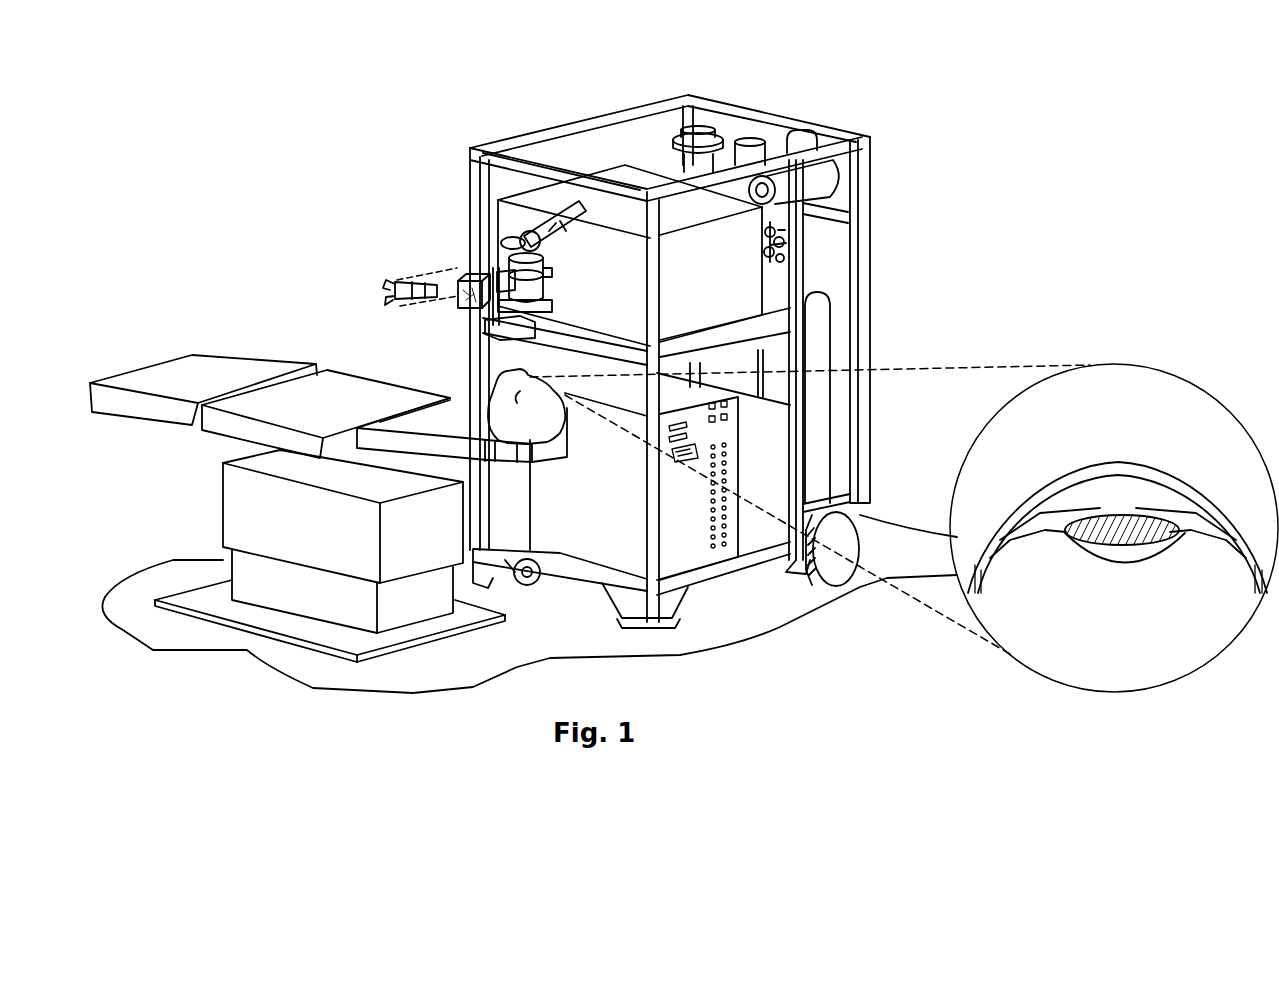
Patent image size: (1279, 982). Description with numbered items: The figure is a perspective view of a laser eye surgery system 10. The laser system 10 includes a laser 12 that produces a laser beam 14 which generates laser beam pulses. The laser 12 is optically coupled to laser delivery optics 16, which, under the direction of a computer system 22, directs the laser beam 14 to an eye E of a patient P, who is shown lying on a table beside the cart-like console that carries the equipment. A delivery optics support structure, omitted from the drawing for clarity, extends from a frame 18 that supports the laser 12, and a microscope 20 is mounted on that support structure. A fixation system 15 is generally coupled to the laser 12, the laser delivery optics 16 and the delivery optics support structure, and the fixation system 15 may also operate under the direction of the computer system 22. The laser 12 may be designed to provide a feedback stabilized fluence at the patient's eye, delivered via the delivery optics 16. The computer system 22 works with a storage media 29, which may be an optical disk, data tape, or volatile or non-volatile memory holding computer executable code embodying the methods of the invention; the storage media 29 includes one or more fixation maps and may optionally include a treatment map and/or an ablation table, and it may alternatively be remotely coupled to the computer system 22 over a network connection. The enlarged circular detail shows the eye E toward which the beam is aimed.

The laser eye surgery system 10 is at (245, 183).
The laser 12 is at (880, 234).
The laser beam 14 is at (456, 270).
The fixation system 15 is at (470, 272).
The laser delivery optics 16 is at (440, 303).
The frame 18 is at (557, 135).
The microscope 20 is at (542, 257).
The computer system 22 is at (747, 592).
The storage media 29 is at (680, 462).
The patient P is at (562, 410).
The eye E is at (1150, 388).